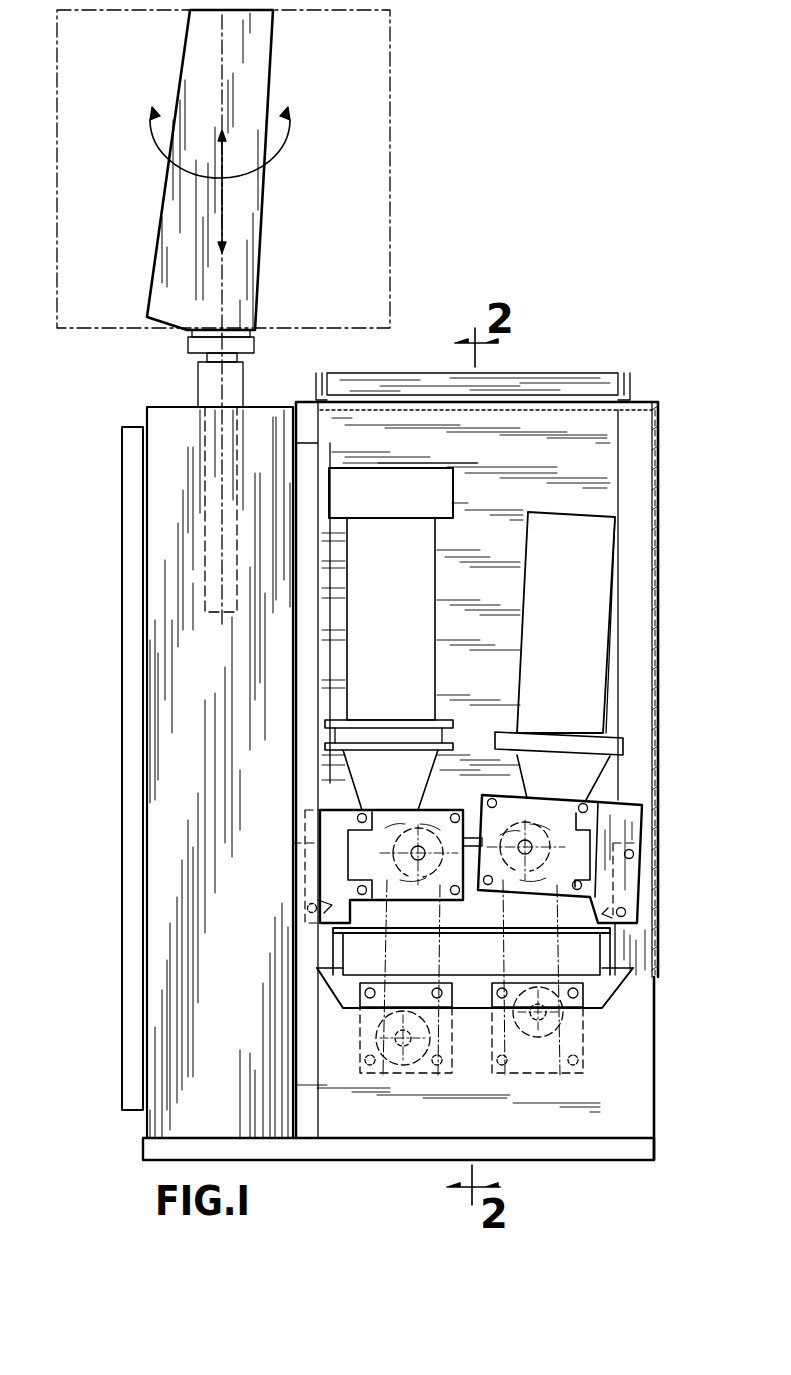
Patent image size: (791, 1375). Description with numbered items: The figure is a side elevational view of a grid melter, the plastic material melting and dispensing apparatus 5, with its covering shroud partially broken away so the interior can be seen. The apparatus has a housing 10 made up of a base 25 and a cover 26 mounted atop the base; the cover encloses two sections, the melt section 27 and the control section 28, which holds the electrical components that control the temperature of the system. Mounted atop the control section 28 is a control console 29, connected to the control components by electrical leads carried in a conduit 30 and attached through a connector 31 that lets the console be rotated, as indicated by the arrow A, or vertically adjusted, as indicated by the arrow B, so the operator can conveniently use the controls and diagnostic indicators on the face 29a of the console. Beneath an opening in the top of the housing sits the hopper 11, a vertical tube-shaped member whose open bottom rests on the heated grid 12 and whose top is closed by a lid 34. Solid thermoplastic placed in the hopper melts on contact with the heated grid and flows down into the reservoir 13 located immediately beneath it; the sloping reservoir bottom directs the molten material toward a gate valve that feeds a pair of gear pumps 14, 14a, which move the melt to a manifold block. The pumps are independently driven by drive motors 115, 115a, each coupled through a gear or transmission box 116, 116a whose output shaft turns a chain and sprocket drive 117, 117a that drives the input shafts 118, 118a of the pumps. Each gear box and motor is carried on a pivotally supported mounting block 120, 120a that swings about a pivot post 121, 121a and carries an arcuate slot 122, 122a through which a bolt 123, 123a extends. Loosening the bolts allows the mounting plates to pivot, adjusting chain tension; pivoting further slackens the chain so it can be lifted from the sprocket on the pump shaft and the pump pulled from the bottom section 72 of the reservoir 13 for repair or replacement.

The plastic material melting and dispensing apparatus 5 is at (662, 223).
The housing 10 is at (660, 528).
The hopper 11 is at (574, 468).
The heated grid 12 is at (476, 836).
The reservoir 13 is at (597, 952).
The gear pump 14 is at (586, 1045).
The gear pump 14a is at (366, 1075).
The base 25 is at (665, 1092).
The cover 26 is at (658, 740).
The melt section 27 is at (636, 595).
The control section 28 is at (208, 700).
The control console 29 is at (388, 246).
The face of the console 29a is at (157, 223).
The conduit 30 is at (206, 541).
The connector 31 is at (160, 362).
The lid 34 is at (552, 384).
The bottom section of the reservoir 72 is at (603, 998).
The drive motor 115 is at (576, 622).
The drive motor 115a is at (404, 622).
The gear or transmission box 116 is at (550, 798).
The gear or transmission box 116a is at (396, 799).
The chain and sprocket drive 117 is at (506, 944).
The chain and sprocket drive 117a is at (440, 955).
The input shaft 118 is at (551, 1044).
The input shaft 118a is at (429, 1080).
The mounting block 120 is at (648, 805).
The mounting block 120a is at (338, 808).
The pivot post 121 is at (634, 860).
The pivot post 121a is at (306, 845).
The arcuate slot 122 is at (630, 911).
The arcuate slot 122a is at (334, 906).
The bolt 123 is at (626, 906).
The bolt 123a is at (336, 934).
The arrow A is at (286, 154).
The arrow B is at (224, 218).